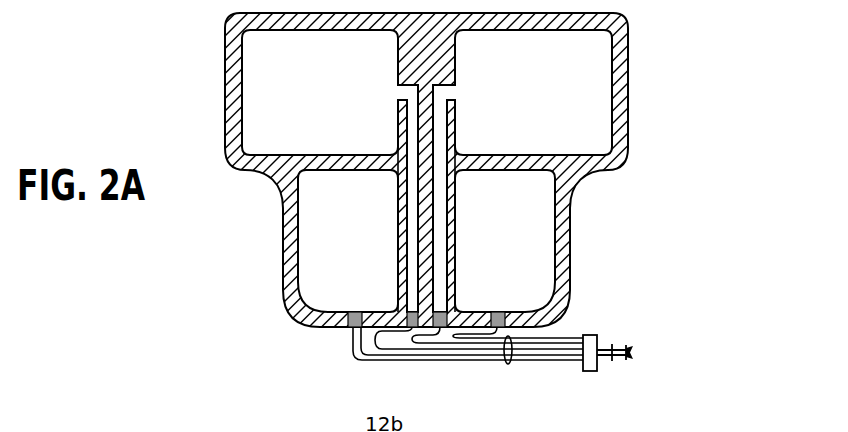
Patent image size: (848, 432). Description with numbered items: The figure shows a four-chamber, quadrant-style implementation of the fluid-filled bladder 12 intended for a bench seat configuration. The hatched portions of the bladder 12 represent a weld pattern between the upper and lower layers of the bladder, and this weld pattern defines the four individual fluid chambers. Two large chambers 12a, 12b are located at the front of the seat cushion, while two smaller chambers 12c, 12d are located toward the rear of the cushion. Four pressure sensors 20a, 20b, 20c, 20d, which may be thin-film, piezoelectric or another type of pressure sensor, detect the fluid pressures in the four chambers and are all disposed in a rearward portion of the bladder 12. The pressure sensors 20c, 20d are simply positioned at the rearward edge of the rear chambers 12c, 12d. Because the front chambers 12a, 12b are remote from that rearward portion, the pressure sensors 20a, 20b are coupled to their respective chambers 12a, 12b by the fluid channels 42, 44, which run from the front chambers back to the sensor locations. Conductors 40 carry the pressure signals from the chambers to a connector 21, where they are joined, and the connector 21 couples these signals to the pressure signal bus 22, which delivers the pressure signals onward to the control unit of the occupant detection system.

The fluid-filled bladder 12 is at (720, 191).
The fluid chamber 12a is at (580, 72).
The fluid chamber 12b is at (270, 72).
The fluid chamber 12c is at (313, 243).
The fluid chamber 12d is at (553, 243).
The pressure sensor 20a is at (440, 310).
The pressure sensor 20b is at (411, 310).
The pressure sensor 20c is at (356, 312).
The pressure sensor 20d is at (494, 312).
The connector 21 is at (587, 372).
The pressure signal bus 22 is at (614, 361).
The conductors 40 is at (508, 364).
The fluid channel 42 is at (445, 118).
The fluid channel 44 is at (413, 122).